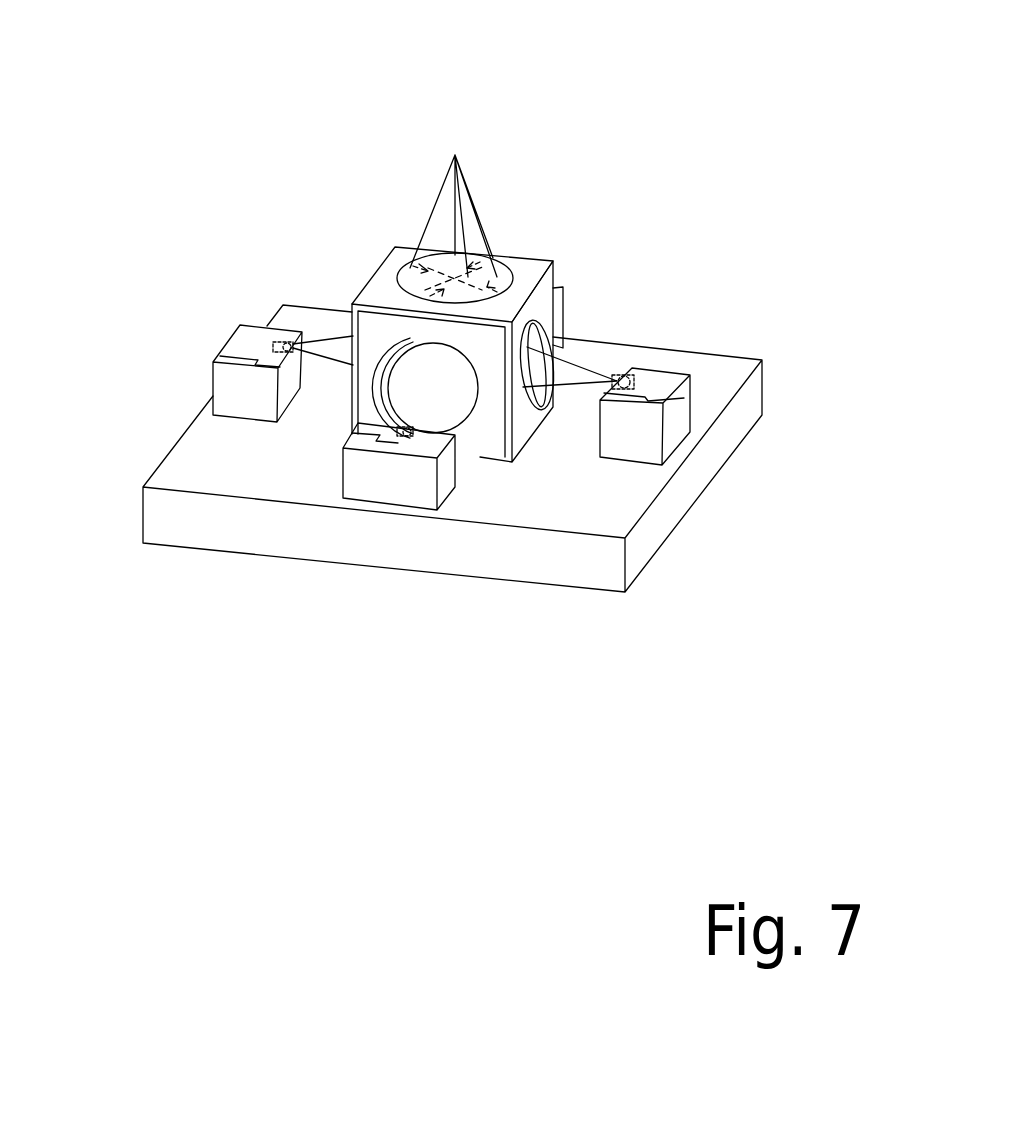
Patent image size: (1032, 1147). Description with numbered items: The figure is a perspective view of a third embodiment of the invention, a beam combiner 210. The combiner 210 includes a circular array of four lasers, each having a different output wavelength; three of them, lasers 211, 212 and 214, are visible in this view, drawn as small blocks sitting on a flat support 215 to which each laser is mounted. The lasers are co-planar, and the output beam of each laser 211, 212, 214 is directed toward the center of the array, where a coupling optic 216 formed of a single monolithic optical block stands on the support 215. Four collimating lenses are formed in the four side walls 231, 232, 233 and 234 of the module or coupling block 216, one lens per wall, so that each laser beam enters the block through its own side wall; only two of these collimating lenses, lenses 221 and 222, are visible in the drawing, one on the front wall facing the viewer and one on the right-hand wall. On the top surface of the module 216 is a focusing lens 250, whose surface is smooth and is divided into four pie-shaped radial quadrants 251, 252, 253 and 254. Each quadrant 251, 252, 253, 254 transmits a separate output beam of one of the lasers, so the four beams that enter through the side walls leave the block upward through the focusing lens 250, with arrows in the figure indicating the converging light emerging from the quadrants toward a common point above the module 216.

The combiner 210 is at (752, 112).
The laser 211 is at (383, 576).
The laser 212 is at (751, 409).
The laser 214 is at (195, 366).
The support 215 is at (474, 490).
The coupling optic 216 is at (531, 281).
The collimating lens 221 is at (461, 514).
The collimating lens 222 is at (707, 349).
The side wall 231 is at (312, 516).
The side wall 232 is at (691, 308).
The side wall 233 is at (483, 172).
The side wall 234 is at (380, 197).
The focusing lens 250 is at (453, 164).
The radial quadrant 251 is at (322, 279).
The radial quadrant 252 is at (668, 255).
The radial quadrant 253 is at (564, 168).
The radial quadrant 254 is at (387, 160).